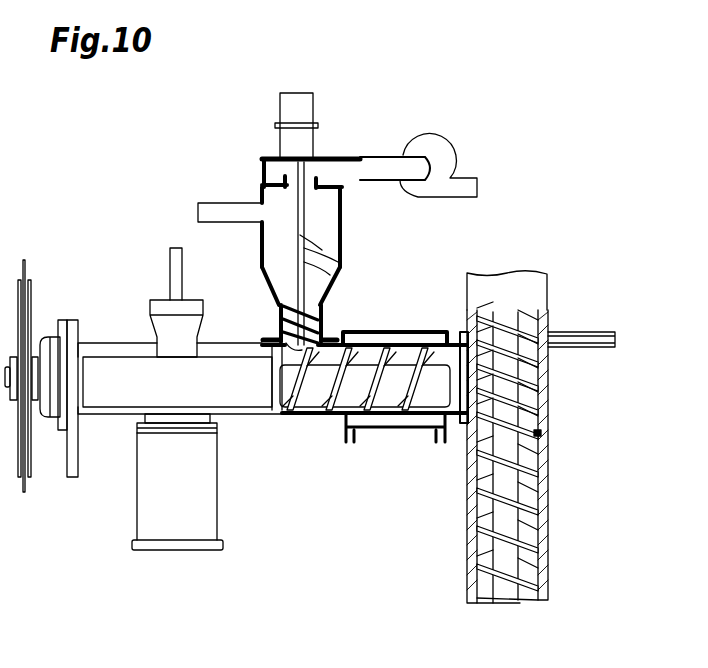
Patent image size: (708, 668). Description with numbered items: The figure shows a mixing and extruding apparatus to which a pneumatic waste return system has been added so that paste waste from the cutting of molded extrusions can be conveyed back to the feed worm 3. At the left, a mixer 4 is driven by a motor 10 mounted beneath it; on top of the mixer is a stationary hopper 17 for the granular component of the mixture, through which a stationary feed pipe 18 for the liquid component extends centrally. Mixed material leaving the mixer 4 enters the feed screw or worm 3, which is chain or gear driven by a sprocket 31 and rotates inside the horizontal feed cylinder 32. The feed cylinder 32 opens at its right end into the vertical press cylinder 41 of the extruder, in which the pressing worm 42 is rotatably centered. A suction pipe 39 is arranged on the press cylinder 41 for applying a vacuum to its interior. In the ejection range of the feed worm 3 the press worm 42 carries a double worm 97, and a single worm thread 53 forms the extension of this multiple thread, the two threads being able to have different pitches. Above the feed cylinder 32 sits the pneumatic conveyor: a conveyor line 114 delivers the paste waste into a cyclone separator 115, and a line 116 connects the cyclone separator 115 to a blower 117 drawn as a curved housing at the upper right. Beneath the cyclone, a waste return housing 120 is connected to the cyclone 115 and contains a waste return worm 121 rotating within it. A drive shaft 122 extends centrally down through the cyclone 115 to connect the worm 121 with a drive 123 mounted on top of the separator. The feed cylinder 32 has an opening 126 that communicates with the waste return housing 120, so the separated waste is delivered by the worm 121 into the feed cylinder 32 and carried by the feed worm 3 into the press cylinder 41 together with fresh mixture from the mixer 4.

The feed screw 3 is at (320, 382).
The mixer 4 is at (111, 356).
The motor 10 is at (177, 482).
The hopper 17 is at (196, 302).
The feed pipe 18 is at (173, 257).
The sprocket 31 is at (24, 258).
The feed cylinder 32 is at (307, 415).
The suction pipe 39 is at (572, 339).
The press cylinder 41 is at (548, 414).
The pressing worm 42 is at (510, 498).
The single worm thread 53 is at (540, 598).
The double worm 97 is at (541, 433).
The conveyor line 114 is at (205, 203).
The cyclone separator 115 is at (323, 213).
The line 116 is at (344, 157).
The blower 117 is at (427, 147).
The waste return housing 120 is at (279, 306).
The waste return worm 121 is at (321, 319).
The drive shaft 122 is at (300, 251).
The drive 123 is at (288, 141).
The opening 126 is at (279, 340).